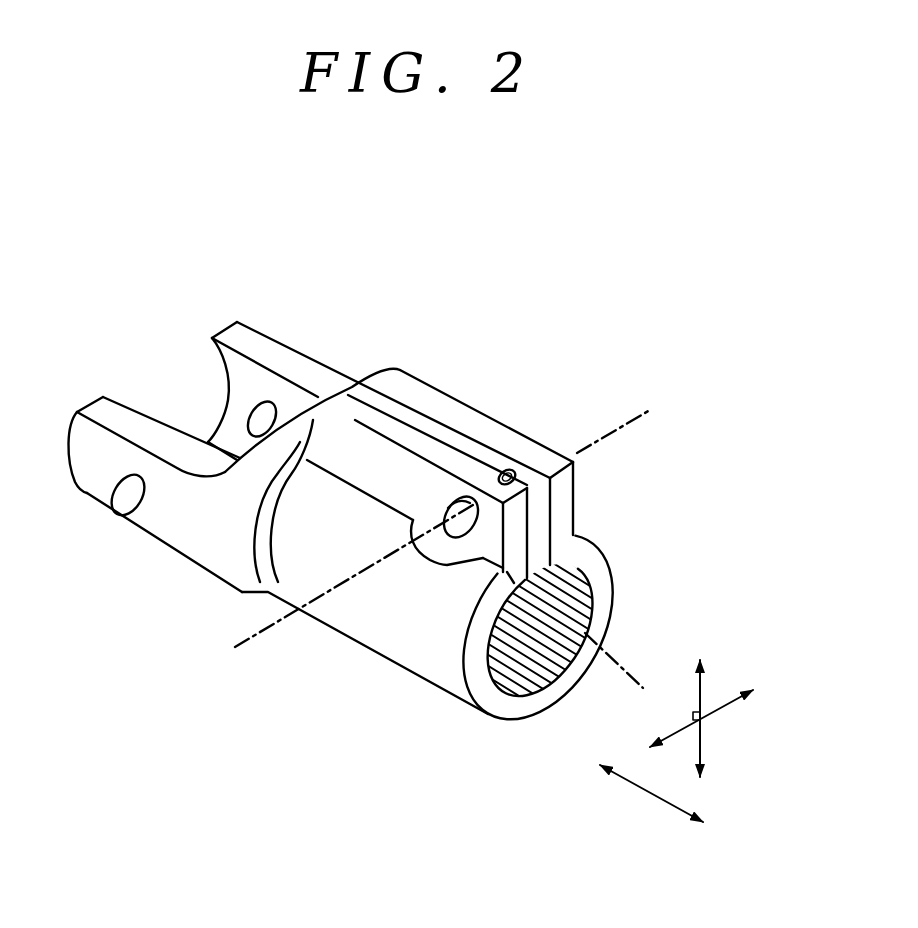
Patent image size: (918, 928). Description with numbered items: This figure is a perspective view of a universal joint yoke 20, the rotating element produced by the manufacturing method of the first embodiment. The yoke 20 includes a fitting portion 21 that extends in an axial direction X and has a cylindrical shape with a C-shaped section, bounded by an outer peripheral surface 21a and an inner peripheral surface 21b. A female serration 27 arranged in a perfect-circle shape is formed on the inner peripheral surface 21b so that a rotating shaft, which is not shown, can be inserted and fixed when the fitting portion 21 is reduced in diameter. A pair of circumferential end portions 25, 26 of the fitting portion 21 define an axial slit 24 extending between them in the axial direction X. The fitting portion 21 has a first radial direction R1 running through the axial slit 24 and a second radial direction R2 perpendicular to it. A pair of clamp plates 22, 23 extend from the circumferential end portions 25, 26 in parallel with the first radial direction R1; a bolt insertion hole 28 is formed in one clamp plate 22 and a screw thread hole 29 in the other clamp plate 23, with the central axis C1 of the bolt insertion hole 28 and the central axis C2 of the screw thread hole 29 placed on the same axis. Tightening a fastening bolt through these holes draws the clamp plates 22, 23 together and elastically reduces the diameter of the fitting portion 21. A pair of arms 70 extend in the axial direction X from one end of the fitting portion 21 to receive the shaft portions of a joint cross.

The universal joint yoke 20 is at (306, 340).
The fitting portion 21 is at (427, 640).
The outer peripheral surface 21a is at (356, 616).
The inner peripheral surface 21b is at (567, 600).
The clamp plate 22 is at (381, 423).
The clamp plate 23 is at (419, 390).
The axial slit 24 is at (457, 443).
The circumferential end portion 25 is at (487, 590).
The circumferential end portion 26 is at (597, 543).
The female serration 27 is at (537, 670).
The bolt insertion hole 28 is at (447, 498).
The screw thread hole 29 is at (506, 470).
The arm 70 is at (232, 337).
The central axis of the bolt insertion hole C1 is at (250, 638).
The central axis of the screw thread hole C2 is at (617, 430).
The first radial direction R1 is at (697, 698).
The second radial direction R2 is at (720, 700).
The axial direction X is at (650, 793).